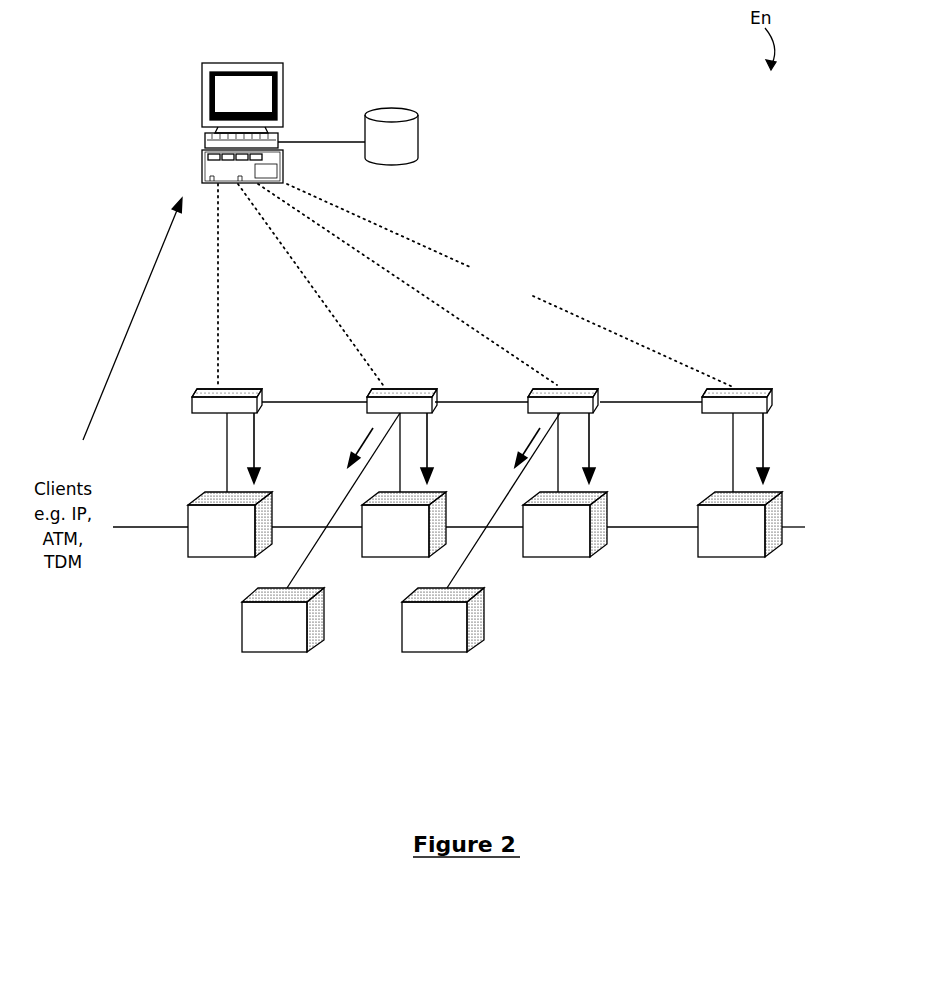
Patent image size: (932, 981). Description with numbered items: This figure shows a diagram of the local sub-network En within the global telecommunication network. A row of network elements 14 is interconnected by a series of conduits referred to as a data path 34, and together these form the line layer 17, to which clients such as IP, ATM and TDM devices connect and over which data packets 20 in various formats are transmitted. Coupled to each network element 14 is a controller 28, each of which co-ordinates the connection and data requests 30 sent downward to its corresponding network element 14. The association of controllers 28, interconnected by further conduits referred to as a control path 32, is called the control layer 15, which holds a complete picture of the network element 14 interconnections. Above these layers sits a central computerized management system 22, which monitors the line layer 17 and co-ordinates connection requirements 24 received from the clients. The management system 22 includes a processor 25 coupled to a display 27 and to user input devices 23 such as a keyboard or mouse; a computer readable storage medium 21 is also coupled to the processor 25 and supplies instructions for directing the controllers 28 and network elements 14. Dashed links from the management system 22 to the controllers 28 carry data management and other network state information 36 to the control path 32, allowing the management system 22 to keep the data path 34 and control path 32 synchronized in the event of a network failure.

The network element 14 is at (202, 557).
The control layer 15 is at (838, 380).
The line layer 17 is at (877, 553).
The data packets 20 is at (150, 512).
The computer readable storage medium 21 is at (380, 149).
The central computerized management system 22 is at (405, 63).
The user input devices 23 is at (283, 165).
The connection requirements 24 is at (134, 312).
The processor 25 is at (280, 133).
The display 27 is at (285, 73).
The controller 28 is at (243, 396).
The connection and data requests 30 is at (254, 450).
The control path 32 is at (647, 401).
The data path 34 is at (650, 529).
The network state information 36 is at (501, 270).